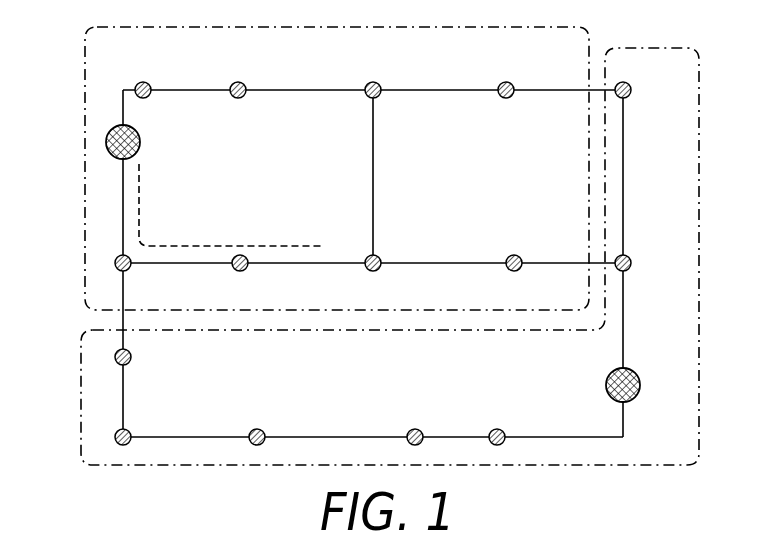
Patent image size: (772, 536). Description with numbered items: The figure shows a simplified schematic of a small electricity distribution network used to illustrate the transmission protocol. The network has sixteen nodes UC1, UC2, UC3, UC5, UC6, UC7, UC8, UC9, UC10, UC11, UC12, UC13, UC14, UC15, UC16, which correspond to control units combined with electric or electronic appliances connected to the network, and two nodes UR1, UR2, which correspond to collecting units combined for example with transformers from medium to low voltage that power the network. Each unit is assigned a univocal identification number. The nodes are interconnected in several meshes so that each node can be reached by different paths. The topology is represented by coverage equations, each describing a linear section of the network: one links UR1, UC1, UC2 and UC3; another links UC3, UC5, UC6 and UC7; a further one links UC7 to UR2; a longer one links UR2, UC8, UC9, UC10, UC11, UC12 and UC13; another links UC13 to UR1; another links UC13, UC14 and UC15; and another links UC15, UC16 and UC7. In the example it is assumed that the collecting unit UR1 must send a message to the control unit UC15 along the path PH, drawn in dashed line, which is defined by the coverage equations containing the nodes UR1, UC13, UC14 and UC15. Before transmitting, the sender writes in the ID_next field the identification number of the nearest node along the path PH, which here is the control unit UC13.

The control unit node UC1 is at (147, 83).
The control unit node UC2 is at (242, 83).
The control unit node UC3 is at (377, 83).
The control unit node UC5 is at (510, 83).
The control unit node UC6 is at (627, 83).
The control unit node UC7 is at (630, 258).
The control unit node UC8 is at (501, 430).
The control unit node UC9 is at (419, 430).
The control unit node UC10 is at (261, 430).
The control unit node UC11 is at (128, 431).
The control unit node UC12 is at (130, 360).
The control unit node UC13 is at (127, 270).
The control unit node UC14 is at (244, 270).
The control unit node UC15 is at (377, 270).
The control unit node UC16 is at (518, 270).
The collecting unit node UR1 is at (106, 140).
The collecting unit node UR2 is at (641, 386).
The path PH is at (141, 178).